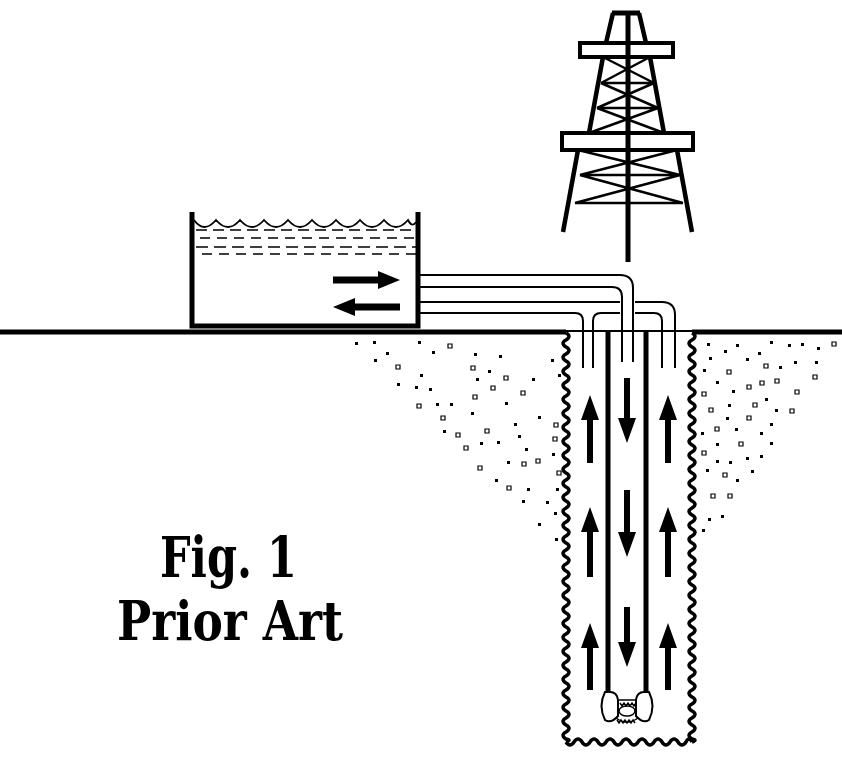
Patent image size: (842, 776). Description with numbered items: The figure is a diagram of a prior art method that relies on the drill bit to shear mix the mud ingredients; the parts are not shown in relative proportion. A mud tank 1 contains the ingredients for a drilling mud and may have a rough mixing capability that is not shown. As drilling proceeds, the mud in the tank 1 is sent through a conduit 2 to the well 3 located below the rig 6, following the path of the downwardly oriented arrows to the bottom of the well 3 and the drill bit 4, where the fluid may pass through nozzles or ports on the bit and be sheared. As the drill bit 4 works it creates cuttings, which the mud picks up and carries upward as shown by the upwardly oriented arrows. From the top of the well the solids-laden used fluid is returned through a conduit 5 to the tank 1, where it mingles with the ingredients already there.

The mud tank 1 is at (192, 252).
The conduit 2 is at (540, 282).
The well 3 is at (566, 612).
The drill bit 4 is at (602, 716).
The conduit 5 is at (510, 307).
The rig 6 is at (665, 100).